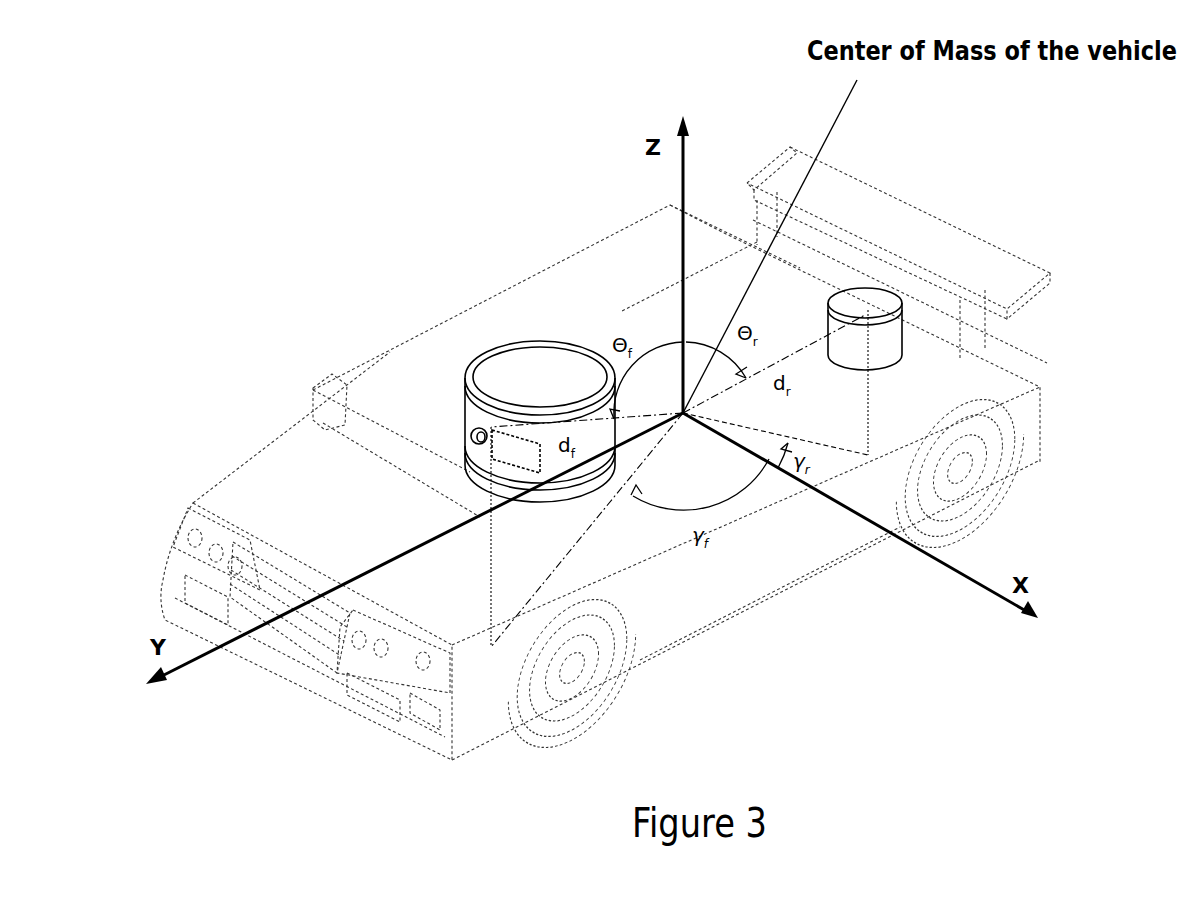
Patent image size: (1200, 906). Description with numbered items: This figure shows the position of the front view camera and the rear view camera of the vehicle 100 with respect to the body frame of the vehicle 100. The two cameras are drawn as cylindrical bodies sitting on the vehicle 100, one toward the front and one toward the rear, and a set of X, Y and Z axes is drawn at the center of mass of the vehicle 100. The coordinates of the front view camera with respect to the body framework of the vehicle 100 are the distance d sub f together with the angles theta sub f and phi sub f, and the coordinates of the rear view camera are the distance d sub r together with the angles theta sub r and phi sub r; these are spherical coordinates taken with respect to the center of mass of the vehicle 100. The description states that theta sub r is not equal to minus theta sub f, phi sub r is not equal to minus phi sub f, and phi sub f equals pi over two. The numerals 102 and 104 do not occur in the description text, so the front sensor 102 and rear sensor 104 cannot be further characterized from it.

The vehicle 100 is at (285, 260).
The front sensor 102 is at (540, 417).
The rear sensor 104 is at (875, 329).